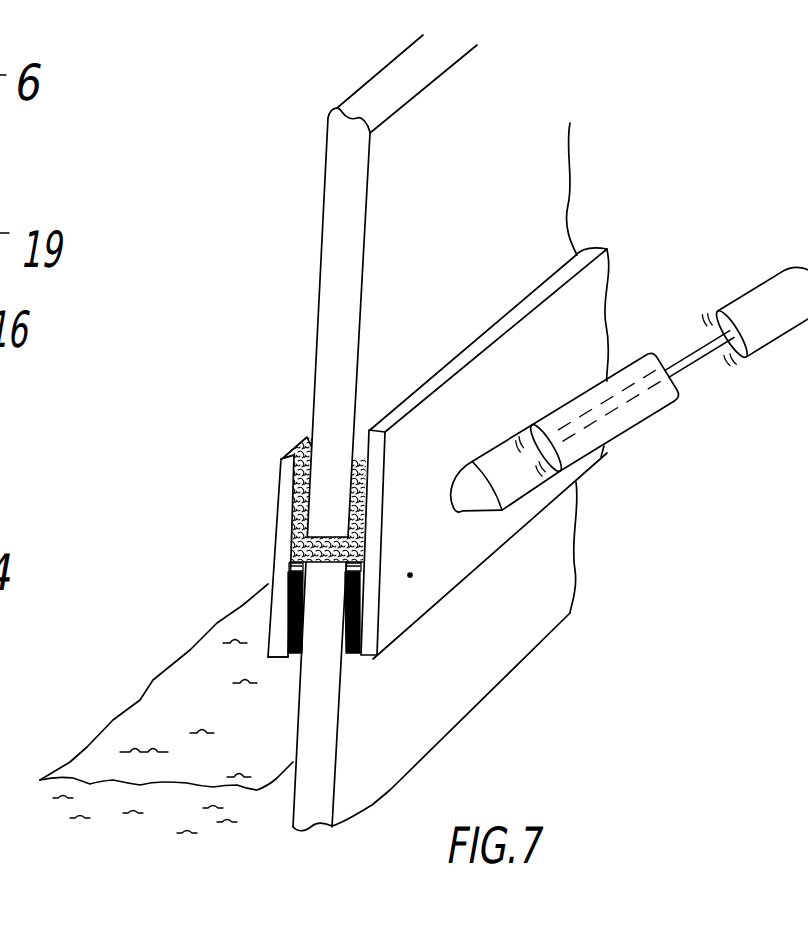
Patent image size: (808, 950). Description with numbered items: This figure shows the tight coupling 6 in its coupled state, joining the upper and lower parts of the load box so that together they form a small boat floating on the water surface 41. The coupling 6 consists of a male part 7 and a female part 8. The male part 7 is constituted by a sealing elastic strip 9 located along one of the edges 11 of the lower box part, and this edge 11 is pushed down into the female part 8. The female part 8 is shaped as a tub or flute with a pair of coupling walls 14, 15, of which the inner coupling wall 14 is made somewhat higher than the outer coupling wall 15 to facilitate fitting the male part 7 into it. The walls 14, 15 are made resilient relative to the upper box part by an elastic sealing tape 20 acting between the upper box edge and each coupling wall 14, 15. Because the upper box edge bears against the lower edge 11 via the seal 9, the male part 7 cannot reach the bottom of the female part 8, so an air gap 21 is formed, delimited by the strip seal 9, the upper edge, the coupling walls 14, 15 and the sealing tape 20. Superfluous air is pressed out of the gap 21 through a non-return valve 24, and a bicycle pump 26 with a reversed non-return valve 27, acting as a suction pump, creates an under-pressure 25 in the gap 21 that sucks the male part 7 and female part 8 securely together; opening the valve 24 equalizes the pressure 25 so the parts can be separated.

The tight coupling 6 is at (647, 267).
The male part 7 is at (292, 442).
The female part 8 is at (275, 533).
The sealing elastic strip 9 is at (340, 544).
The edge of the lower part 11 is at (463, 184).
The inner coupling wall 14 is at (410, 575).
The outer coupling wall 15 is at (271, 650).
The elastic sealing tape 20 is at (350, 657).
The air gap 21 is at (289, 570).
The non-return valve 24 is at (468, 522).
The under-pressure 25 is at (297, 567).
The bicycle pump 26 is at (745, 307).
The reversed non-return valve 27 is at (623, 364).
The water surface 41 is at (82, 763).